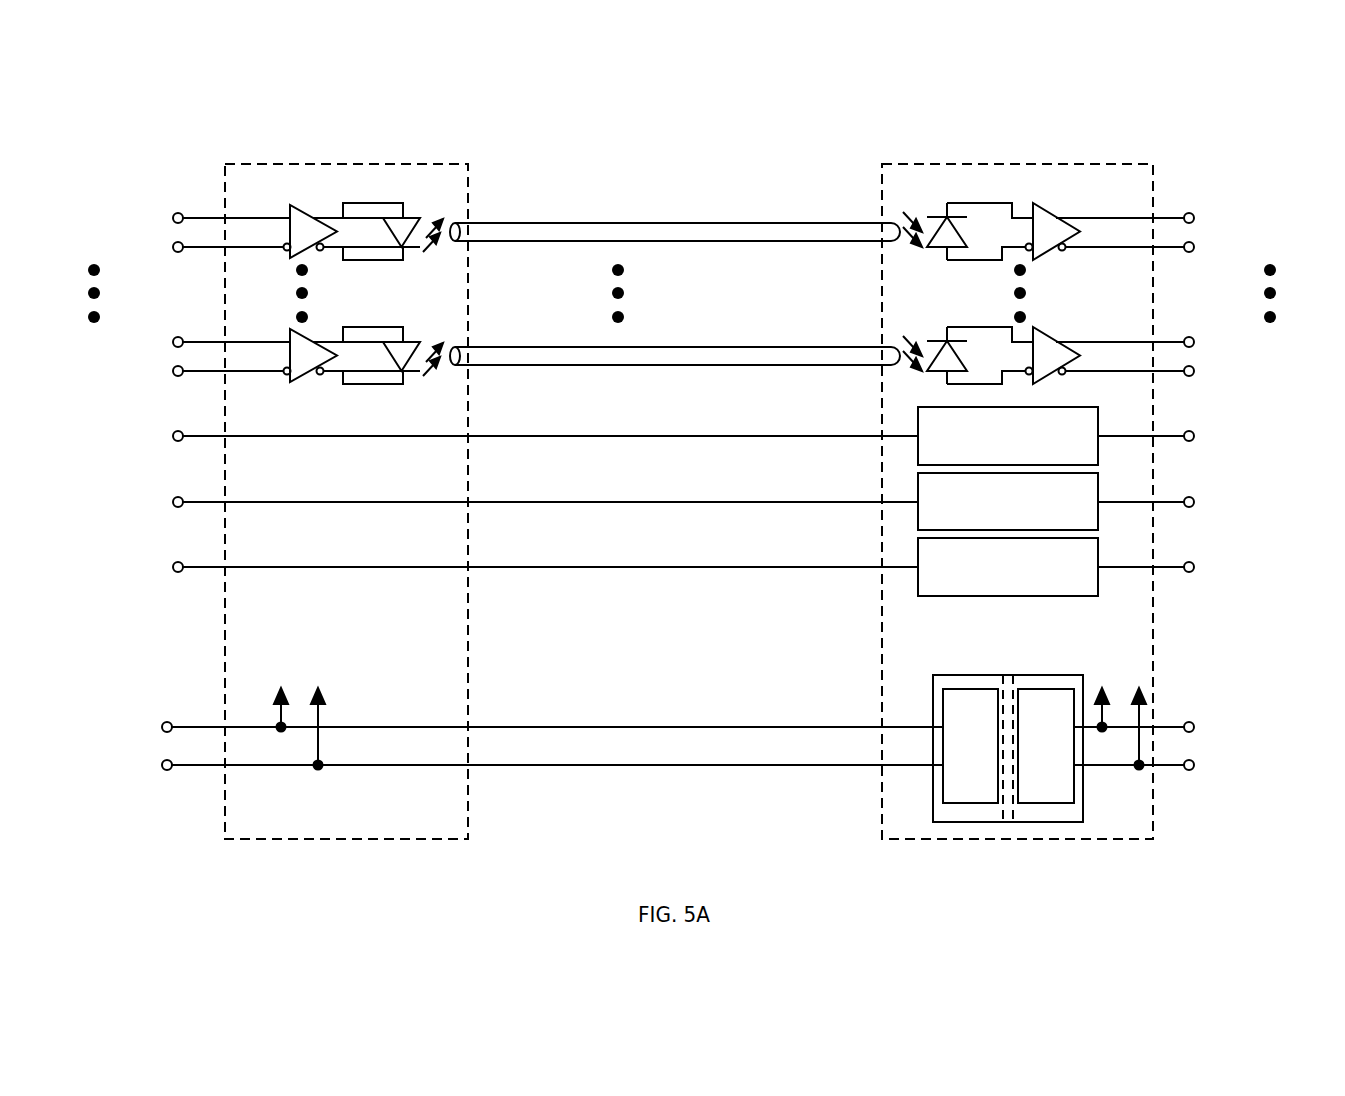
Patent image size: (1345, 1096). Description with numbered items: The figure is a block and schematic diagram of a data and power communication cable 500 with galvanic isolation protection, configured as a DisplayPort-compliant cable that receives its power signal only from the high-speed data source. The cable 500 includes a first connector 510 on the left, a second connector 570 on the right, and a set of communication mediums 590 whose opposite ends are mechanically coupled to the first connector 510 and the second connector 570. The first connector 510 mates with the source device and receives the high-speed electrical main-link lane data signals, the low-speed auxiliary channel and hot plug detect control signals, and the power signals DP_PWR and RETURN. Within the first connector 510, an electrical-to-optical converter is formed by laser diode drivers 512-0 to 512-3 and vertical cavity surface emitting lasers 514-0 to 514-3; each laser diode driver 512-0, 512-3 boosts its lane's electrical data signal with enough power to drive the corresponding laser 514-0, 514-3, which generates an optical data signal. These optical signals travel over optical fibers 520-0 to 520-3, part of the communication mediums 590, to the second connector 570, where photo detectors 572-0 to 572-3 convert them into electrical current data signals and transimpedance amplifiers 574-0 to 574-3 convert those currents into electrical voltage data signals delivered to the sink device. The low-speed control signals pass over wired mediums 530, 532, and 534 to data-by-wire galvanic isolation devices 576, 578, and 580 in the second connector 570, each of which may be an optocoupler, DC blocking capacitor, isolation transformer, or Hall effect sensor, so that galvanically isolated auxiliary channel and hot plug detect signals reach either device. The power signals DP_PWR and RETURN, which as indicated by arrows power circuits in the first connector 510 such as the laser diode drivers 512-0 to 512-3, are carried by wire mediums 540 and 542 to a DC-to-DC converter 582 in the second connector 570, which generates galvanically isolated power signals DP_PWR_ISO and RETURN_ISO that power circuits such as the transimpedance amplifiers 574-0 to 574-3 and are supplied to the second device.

The data and power communication cable 500 is at (813, 78).
The first connector 510 is at (468, 155).
The laser diode driver 512-0 is at (300, 206).
The laser diode driver 512-3 is at (300, 330).
The vertical cavity surface emitting laser 514-0 is at (420, 214).
The vertical cavity surface emitting laser 514-3 is at (420, 338).
The optical fiber 520-0 is at (657, 223).
The optical fiber 520-3 is at (657, 347).
The wired medium 530 is at (657, 436).
The wired medium 532 is at (657, 502).
The wired medium 534 is at (657, 567).
The wire medium 540 is at (695, 727).
The wire medium 542 is at (695, 765).
The second connector 570 is at (1153, 155).
The photo detector 572-0 is at (932, 214).
The photo detector 572-3 is at (932, 338).
The transimpedance amplifier 574-0 is at (1037, 206).
The transimpedance amplifier 574-3 is at (1037, 330).
The data-by-wire galvanic isolation device 576 is at (1098, 423).
The data-by-wire galvanic isolation device 578 is at (1098, 488).
The data-by-wire galvanic isolation device 580 is at (1098, 553).
The DC-to-DC converter 582 is at (932, 690).
The set of communication mediums 590 is at (468, 840).